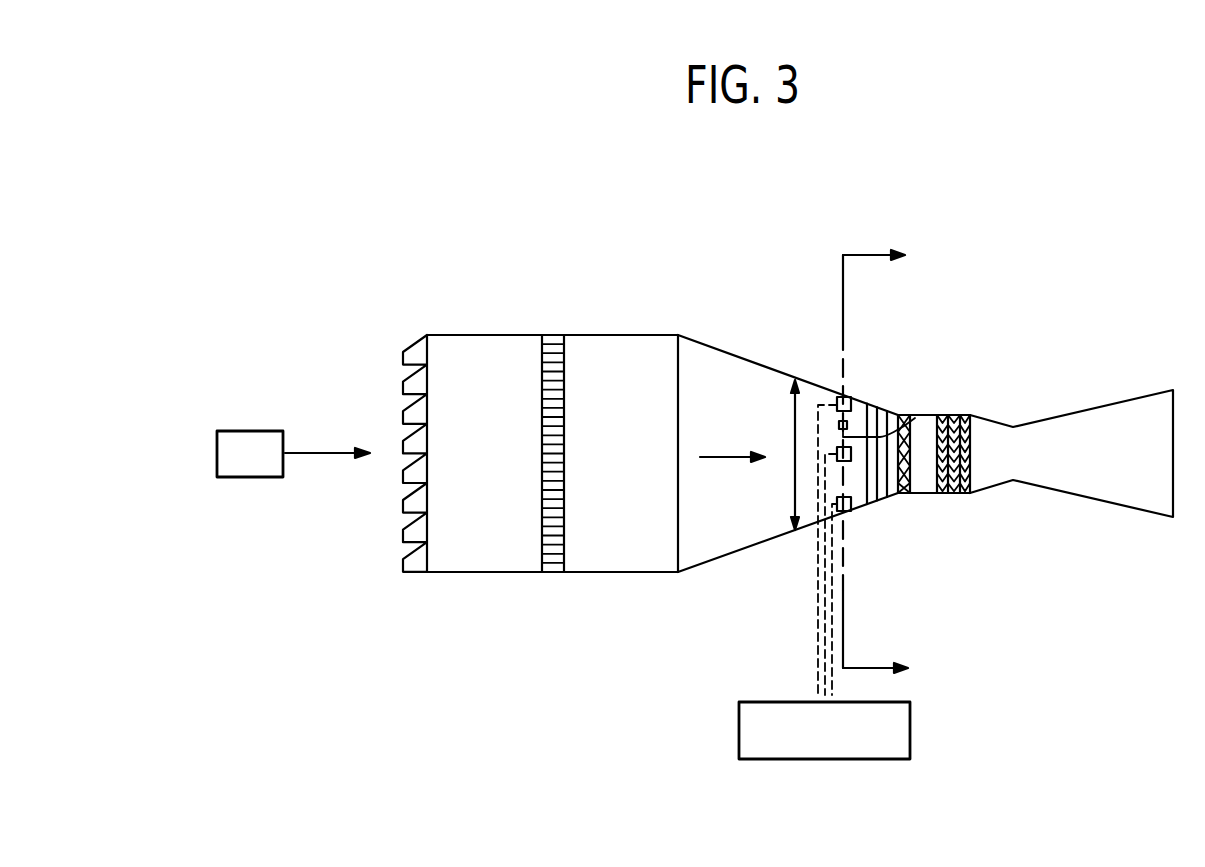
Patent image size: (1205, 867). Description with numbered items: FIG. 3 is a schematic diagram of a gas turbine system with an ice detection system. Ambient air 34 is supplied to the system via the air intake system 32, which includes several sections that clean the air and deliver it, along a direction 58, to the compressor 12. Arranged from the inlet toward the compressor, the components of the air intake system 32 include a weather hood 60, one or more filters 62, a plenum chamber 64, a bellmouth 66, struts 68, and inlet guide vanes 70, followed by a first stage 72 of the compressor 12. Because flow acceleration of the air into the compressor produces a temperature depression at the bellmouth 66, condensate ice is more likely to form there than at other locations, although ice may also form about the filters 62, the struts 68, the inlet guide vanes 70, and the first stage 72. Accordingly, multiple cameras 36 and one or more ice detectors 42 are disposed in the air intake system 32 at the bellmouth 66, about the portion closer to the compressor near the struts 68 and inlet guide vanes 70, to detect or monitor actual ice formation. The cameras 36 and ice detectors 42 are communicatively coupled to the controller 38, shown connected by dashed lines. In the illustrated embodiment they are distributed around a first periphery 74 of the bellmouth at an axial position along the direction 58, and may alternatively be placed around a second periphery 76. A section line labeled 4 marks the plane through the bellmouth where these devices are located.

The compressor 12 is at (1062, 428).
The air intake system 32 is at (717, 284).
The ambient air 34 is at (250, 431).
The cameras 36 is at (843, 397).
The controller 38 is at (788, 760).
The ice detector 42 is at (848, 425).
The direction 58 is at (731, 457).
The weather hood 60 is at (420, 343).
The filters 62 is at (551, 345).
The plenum chamber 64 is at (630, 344).
The bellmouth 66 is at (730, 368).
The struts 68 is at (907, 450).
The inlet guide vanes 70 is at (947, 493).
The first stage 72 is at (947, 415).
The first periphery 74 is at (915, 418).
The second periphery 76 is at (793, 498).
The section line 4- 4 is at (885, 460).